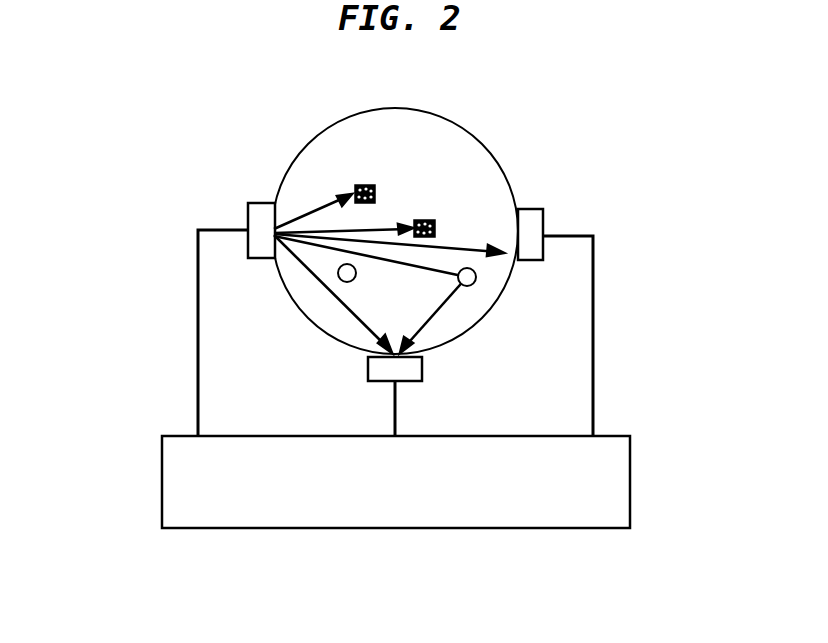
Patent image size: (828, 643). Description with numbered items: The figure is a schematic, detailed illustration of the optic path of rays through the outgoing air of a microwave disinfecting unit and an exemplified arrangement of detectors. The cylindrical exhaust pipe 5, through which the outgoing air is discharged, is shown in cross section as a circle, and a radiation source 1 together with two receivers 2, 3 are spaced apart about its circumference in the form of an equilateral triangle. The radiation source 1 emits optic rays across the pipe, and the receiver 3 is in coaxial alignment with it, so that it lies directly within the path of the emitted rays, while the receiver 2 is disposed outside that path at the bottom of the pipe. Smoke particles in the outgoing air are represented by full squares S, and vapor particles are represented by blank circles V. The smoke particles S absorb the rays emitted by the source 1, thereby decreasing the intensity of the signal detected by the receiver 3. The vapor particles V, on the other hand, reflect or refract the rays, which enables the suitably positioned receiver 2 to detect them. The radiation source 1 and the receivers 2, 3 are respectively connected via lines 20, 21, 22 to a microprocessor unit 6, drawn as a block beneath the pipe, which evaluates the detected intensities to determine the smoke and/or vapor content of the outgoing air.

The radiation source 1 is at (250, 216).
The receiver 2 is at (415, 371).
The receiver 3 is at (540, 221).
The exhaust pipe 5 is at (470, 128).
The microprocessor unit 6 is at (530, 518).
The line 20 is at (197, 347).
The line 21 is at (394, 400).
The line 22 is at (595, 345).
The smoke particles S is at (375, 195).
The vapor particles V is at (475, 283).